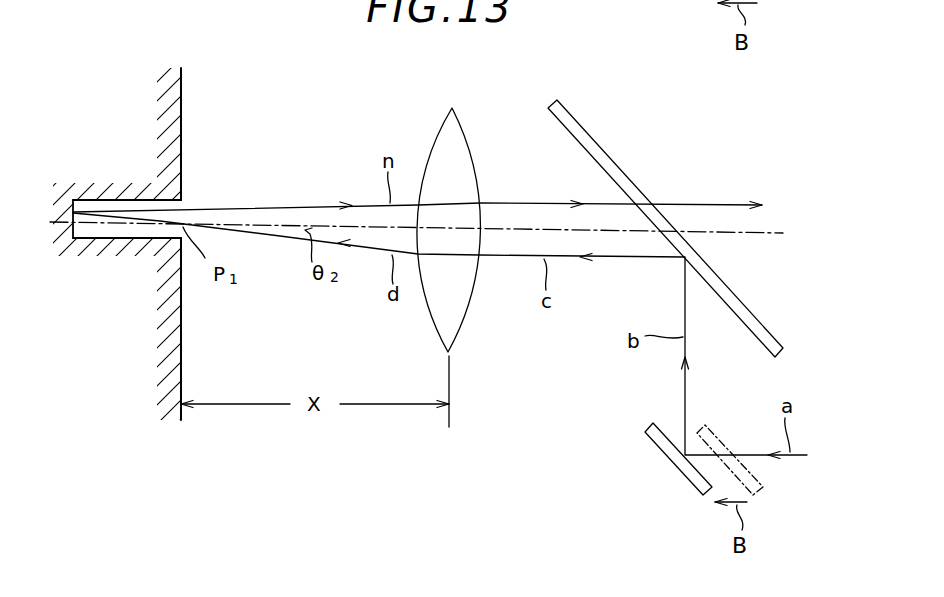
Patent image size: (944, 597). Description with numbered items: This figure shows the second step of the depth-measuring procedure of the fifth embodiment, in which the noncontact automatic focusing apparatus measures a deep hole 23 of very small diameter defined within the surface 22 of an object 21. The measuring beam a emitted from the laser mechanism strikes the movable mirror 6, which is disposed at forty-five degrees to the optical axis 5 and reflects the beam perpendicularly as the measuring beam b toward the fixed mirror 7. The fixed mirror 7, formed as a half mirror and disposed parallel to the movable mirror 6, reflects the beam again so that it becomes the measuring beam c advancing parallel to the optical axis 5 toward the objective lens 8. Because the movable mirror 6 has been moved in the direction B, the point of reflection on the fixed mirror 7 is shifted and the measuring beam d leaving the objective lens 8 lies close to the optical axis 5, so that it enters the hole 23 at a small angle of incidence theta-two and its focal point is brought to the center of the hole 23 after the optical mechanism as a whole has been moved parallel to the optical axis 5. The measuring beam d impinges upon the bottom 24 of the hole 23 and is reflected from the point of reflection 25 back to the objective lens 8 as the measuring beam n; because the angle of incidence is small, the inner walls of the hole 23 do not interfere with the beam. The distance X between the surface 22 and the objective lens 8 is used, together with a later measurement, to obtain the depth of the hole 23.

The optical axis 5 is at (730, 236).
The movable mirror 6 is at (700, 468).
The fixed mirror 7 is at (569, 112).
The objective lens 8 is at (437, 132).
The object 21 is at (192, 84).
The surface 22 is at (184, 128).
The hole 23 is at (124, 194).
The bottom 24 is at (83, 238).
The point of reflection 25 is at (73, 211).